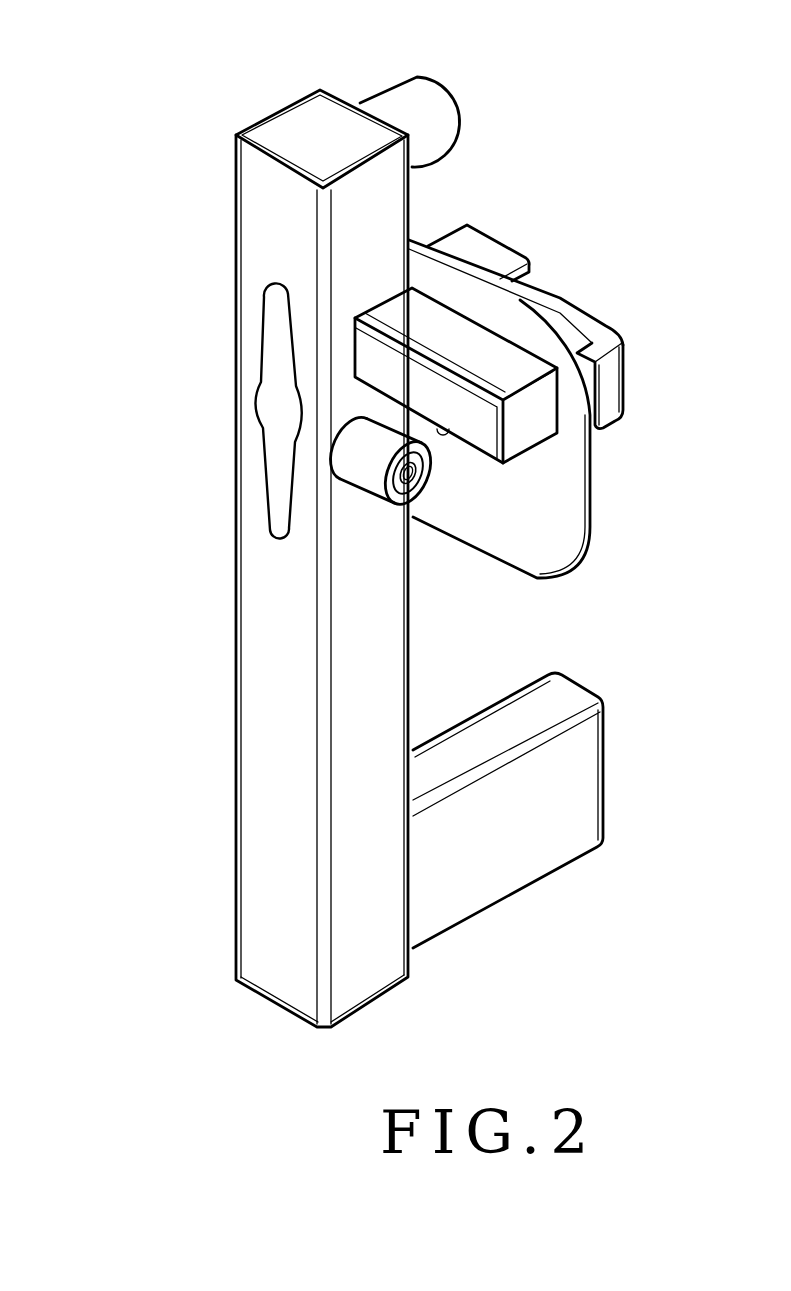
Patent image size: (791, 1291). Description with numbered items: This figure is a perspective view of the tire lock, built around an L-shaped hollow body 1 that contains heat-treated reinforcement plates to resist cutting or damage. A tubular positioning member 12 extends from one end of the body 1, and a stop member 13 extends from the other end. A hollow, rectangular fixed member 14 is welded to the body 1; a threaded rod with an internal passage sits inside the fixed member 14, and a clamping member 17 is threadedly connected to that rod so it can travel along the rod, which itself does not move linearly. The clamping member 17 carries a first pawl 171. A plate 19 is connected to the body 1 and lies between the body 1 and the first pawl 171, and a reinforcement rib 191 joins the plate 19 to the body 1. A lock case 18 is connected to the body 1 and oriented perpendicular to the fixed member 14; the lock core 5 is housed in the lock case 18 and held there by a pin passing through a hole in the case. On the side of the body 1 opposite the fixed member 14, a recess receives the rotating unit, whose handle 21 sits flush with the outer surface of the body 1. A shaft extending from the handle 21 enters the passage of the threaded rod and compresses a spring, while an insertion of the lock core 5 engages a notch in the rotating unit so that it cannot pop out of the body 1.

The body 1 is at (275, 845).
The lock core 5 is at (407, 490).
The tubular positioning member 12 is at (400, 95).
The stop member 13 is at (532, 853).
The fixed member 14 is at (488, 252).
The clamping member 17 is at (583, 318).
The lock case 18 is at (367, 482).
The plate 19 is at (562, 522).
The handle 21 is at (282, 462).
The first pawl 171 is at (613, 393).
The reinforcement rib 191 is at (390, 318).